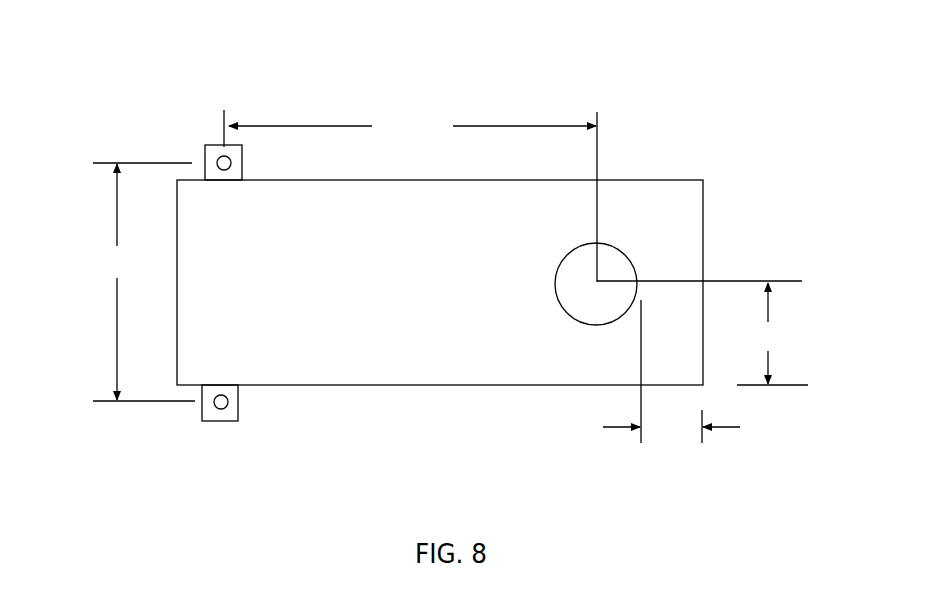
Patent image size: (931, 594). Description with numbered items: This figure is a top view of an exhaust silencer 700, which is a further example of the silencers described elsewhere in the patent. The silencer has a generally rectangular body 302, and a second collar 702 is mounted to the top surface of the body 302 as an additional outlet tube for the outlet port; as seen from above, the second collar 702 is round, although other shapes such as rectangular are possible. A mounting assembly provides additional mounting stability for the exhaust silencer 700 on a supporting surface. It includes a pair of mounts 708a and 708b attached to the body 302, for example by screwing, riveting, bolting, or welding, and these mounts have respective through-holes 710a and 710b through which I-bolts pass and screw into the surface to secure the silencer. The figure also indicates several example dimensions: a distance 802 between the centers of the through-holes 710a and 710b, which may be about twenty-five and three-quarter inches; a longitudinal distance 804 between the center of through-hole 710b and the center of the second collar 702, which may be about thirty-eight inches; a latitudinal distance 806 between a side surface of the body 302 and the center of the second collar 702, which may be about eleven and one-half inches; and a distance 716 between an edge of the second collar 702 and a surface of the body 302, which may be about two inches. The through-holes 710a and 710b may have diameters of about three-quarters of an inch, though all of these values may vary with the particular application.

The exhaust silencer 700 is at (146, 44).
The body 302 is at (193, 177).
The mount 708b is at (207, 143).
The through-hole 710b is at (229, 157).
The mount 708a is at (242, 397).
The through-hole 710a is at (226, 407).
The second collar 702 is at (555, 305).
The distance 802 is at (144, 282).
The longitudinal distance 804 is at (410, 196).
The latitudinal distance 806 is at (702, 333).
The distance 716 is at (671, 371).